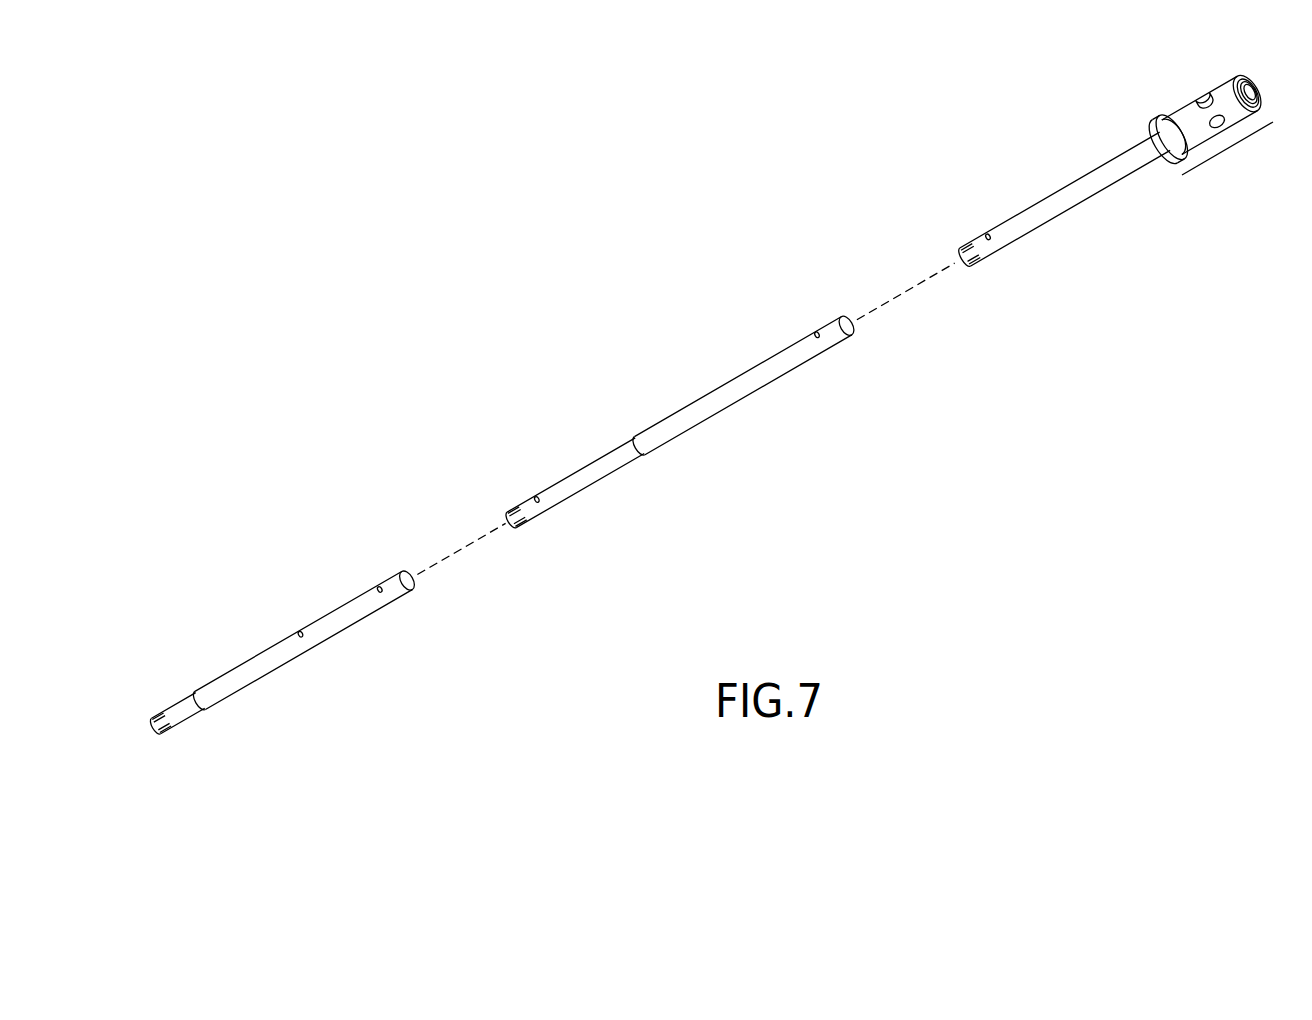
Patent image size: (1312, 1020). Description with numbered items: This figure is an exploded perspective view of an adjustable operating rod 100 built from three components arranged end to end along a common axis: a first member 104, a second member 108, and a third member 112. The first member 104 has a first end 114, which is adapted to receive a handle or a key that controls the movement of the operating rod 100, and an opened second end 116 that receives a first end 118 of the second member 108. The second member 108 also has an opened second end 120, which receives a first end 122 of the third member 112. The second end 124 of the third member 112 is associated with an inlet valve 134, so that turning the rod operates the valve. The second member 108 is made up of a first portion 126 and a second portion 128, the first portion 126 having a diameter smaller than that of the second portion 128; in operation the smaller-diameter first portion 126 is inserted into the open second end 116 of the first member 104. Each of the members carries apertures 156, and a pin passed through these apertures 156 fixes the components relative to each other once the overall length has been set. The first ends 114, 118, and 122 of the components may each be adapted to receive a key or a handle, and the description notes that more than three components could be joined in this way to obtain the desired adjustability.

The operating rod 100 is at (537, 348).
The first member 104 is at (348, 611).
The second member 108 is at (706, 442).
The third member 112 is at (1073, 183).
The first end 114 is at (173, 729).
The second end 116 is at (414, 588).
The first end 118 is at (513, 527).
The second end 120 is at (853, 330).
The first end 122 is at (971, 265).
The second end 124 is at (1152, 137).
The first portion 126 is at (600, 481).
The second portion 128 is at (705, 422).
The inlet valve 134 is at (1230, 148).
The apertures 156 is at (300, 631).